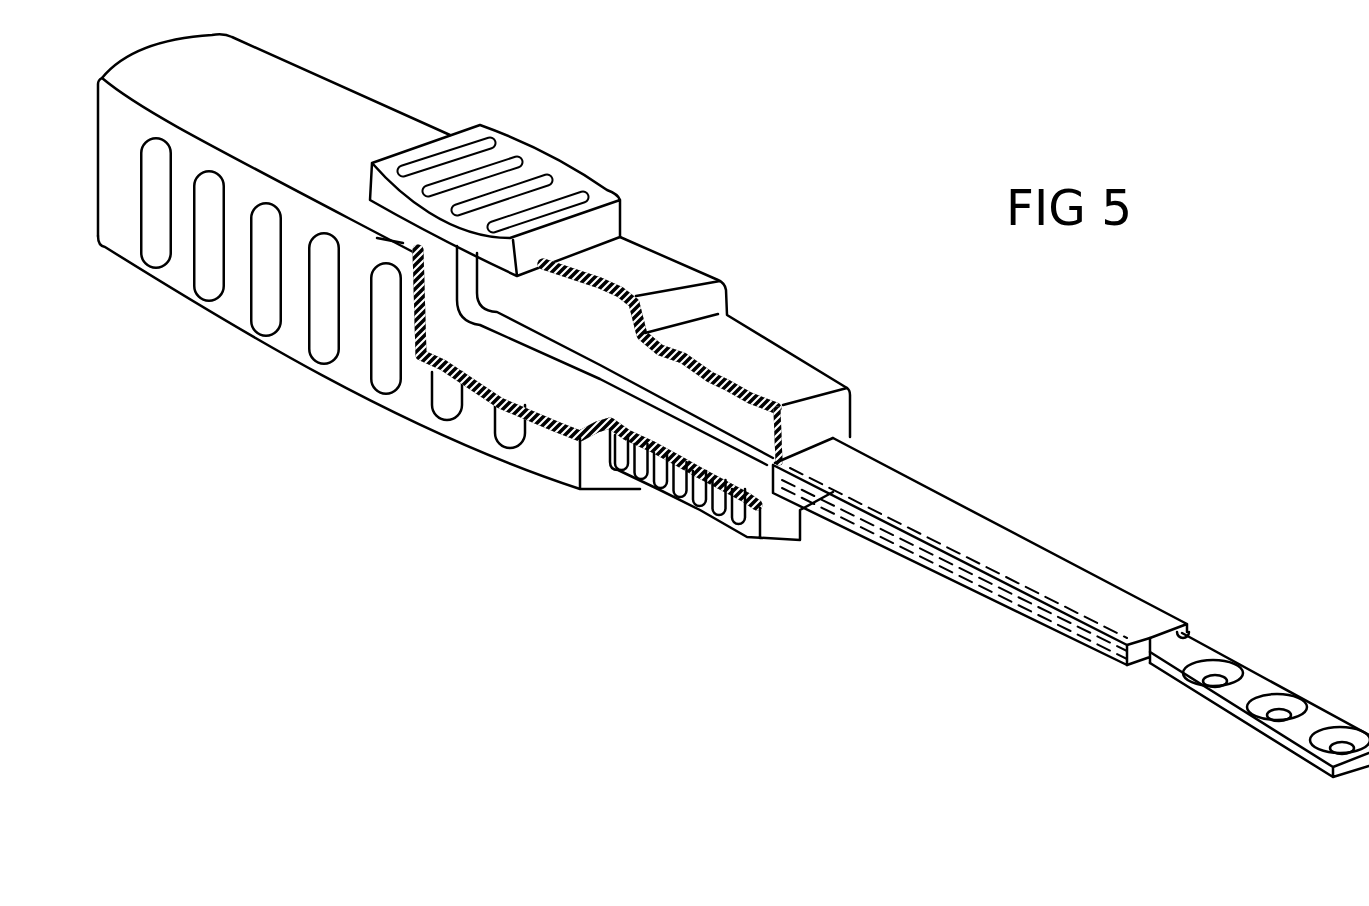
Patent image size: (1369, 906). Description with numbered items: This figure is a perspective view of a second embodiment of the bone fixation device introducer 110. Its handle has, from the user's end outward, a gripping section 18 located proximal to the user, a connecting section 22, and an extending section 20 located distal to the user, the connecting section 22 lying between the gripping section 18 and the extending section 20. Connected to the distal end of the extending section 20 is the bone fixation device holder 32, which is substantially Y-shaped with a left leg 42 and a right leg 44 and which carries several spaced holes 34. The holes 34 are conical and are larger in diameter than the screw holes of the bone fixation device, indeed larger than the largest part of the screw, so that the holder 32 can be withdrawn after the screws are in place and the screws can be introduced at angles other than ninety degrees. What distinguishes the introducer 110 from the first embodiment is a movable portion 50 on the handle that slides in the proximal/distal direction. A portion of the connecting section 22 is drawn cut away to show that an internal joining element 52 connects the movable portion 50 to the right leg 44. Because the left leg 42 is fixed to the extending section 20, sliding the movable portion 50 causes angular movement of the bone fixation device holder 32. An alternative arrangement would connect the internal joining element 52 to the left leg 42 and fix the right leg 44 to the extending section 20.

The gripping section 18 is at (297, 323).
The movable portion 50 is at (557, 190).
The connecting section 22 is at (760, 368).
The internal joining element 52 is at (607, 371).
The bone fixation device introducer 110 is at (720, 519).
The extending section 20 is at (953, 520).
The left leg 42 is at (1183, 638).
The right leg 44 is at (1150, 660).
The bone fixation device holder 32 is at (1320, 717).
The holes 34 is at (1277, 712).